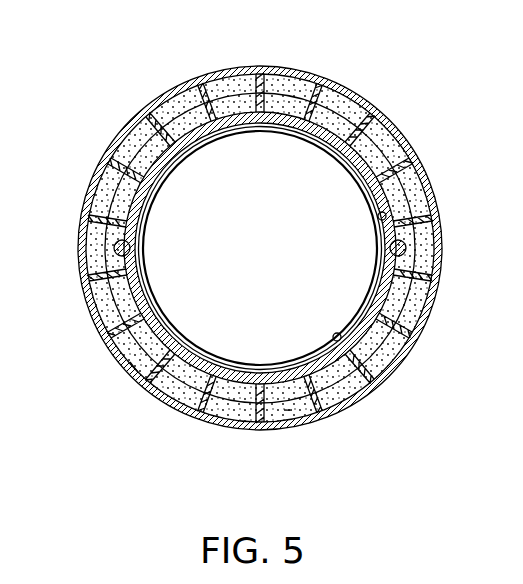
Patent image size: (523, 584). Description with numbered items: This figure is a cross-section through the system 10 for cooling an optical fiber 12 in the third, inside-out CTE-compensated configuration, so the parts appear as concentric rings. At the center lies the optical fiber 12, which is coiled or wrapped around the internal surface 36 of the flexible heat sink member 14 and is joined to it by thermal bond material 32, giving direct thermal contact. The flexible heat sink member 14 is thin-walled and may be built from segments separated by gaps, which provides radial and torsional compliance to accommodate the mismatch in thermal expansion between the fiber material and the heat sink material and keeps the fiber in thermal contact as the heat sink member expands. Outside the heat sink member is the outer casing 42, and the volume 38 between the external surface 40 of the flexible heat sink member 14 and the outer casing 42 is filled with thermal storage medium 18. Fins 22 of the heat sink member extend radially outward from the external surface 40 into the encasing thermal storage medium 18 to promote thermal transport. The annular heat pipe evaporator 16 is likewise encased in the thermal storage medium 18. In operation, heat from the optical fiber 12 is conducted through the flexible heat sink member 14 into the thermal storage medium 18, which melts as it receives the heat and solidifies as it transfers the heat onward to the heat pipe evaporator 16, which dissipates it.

The system 10 is at (404, 73).
The optical fiber 12 is at (352, 352).
The flexible heat sink member 14 is at (382, 300).
The heat pipe evaporator 16 is at (112, 242).
The thermal storage medium 18 is at (130, 360).
The fins 22 is at (218, 80).
The thermal bond material 32 is at (381, 217).
The internal surface 36 is at (372, 328).
The volume 38 is at (287, 412).
The external surface 40 is at (171, 398).
The outer casing 42 is at (262, 432).